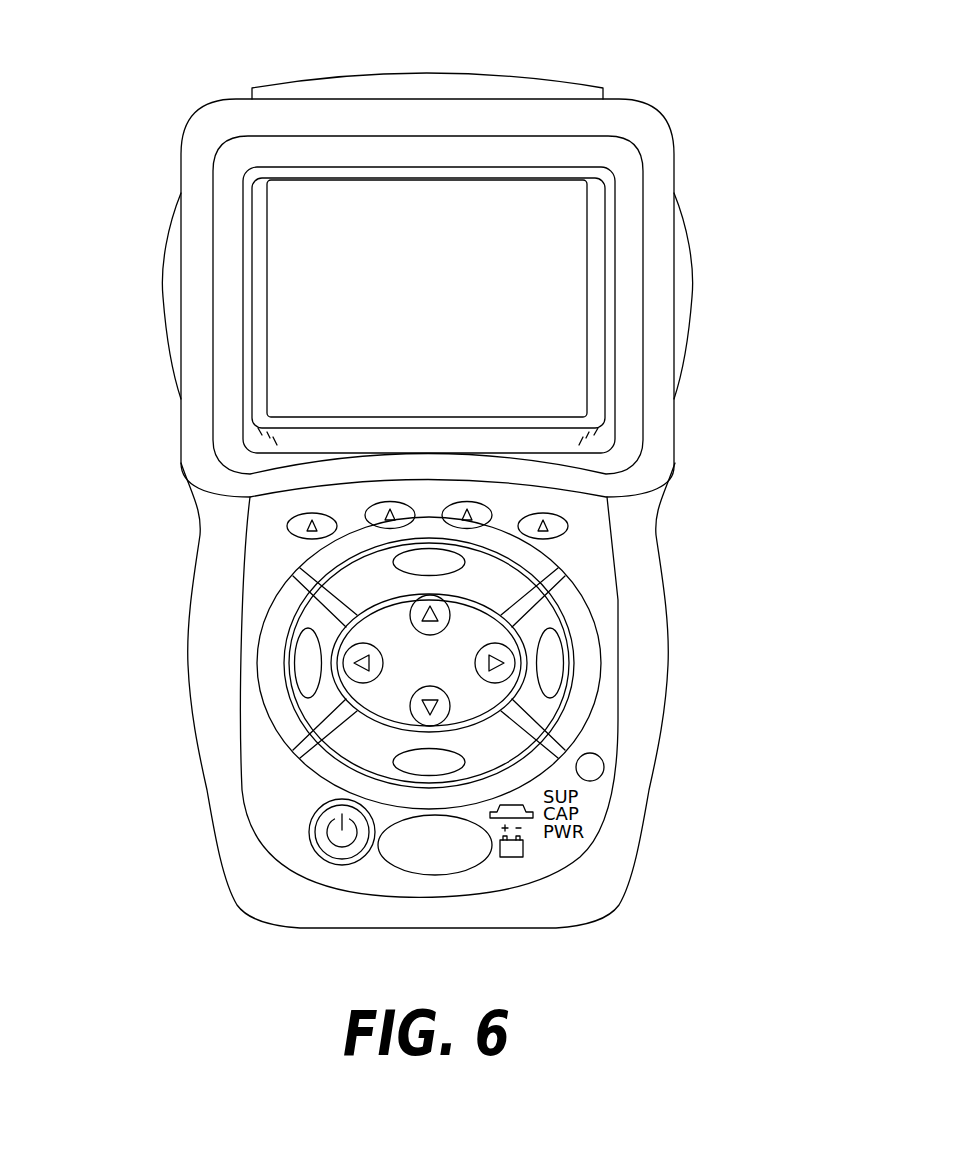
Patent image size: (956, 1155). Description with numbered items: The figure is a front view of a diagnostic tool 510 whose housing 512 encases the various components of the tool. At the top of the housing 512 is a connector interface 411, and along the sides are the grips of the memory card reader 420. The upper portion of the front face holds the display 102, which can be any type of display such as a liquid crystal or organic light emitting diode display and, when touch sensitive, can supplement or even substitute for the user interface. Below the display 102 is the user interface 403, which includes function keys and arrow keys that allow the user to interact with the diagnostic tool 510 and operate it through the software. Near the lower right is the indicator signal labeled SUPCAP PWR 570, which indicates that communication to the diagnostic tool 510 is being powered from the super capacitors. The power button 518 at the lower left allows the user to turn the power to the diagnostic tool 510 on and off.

The diagnostic tool 510 is at (120, 88).
The housing 512 is at (652, 110).
The connector interface 411 is at (426, 73).
The memory card reader 420 is at (166, 290).
The display 102 is at (565, 380).
The user interface 403 is at (538, 613).
The indicator signal SUPCAP PWR 570 is at (603, 757).
The power button 518 is at (310, 833).